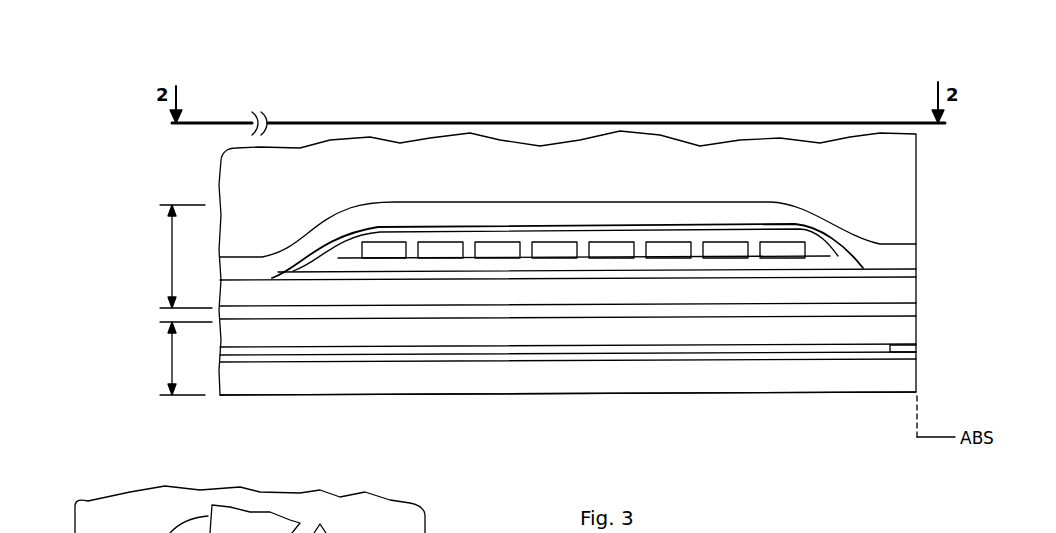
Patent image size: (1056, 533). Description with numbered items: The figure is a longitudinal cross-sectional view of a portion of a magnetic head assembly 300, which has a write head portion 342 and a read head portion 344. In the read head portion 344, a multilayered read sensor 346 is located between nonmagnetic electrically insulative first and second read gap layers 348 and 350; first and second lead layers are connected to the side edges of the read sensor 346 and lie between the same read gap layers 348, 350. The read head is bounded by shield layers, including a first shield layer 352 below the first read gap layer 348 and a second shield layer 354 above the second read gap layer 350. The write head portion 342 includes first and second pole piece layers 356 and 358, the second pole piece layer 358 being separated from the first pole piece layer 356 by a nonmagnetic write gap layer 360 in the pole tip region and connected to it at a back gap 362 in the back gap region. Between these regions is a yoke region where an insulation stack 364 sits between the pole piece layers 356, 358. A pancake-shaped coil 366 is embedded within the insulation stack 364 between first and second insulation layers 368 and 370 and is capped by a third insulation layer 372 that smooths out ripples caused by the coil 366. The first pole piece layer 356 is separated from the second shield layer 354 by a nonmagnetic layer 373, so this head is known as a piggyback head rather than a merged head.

The magnetic head assembly 300 is at (955, 191).
The write head portion 342 is at (165, 263).
The read head portion 344 is at (170, 363).
The read sensor 346 is at (916, 349).
The first read gap layer 348 is at (625, 360).
The second read gap layer 350 is at (598, 345).
The first shield layer S1 352 is at (718, 378).
The second shield layer 354 is at (762, 333).
The first pole piece layer 356 is at (848, 288).
The second pole piece layer 358 is at (520, 210).
The write gap layer 360 is at (882, 272).
The back gap 362 is at (251, 280).
The insulation stack 364 is at (718, 225).
The coil 366 is at (600, 241).
The first insulation layer 368 is at (530, 266).
The second insulation layer 370 is at (468, 238).
The third insulation layer 372 is at (421, 226).
The nonmagnetic layer 373 is at (806, 313).